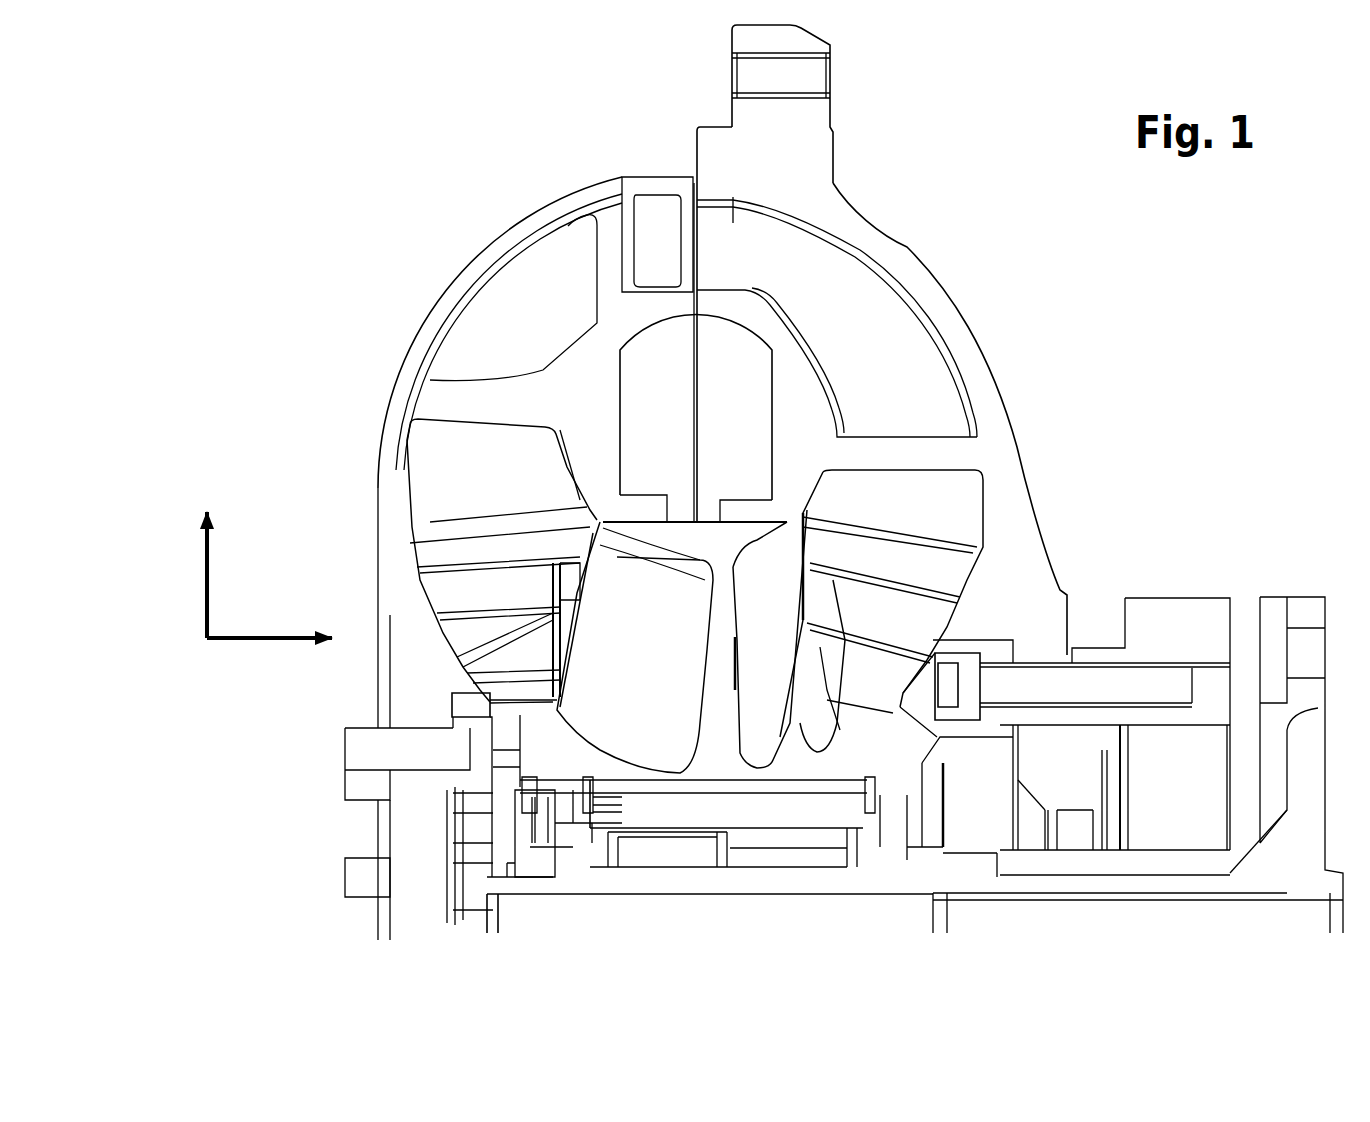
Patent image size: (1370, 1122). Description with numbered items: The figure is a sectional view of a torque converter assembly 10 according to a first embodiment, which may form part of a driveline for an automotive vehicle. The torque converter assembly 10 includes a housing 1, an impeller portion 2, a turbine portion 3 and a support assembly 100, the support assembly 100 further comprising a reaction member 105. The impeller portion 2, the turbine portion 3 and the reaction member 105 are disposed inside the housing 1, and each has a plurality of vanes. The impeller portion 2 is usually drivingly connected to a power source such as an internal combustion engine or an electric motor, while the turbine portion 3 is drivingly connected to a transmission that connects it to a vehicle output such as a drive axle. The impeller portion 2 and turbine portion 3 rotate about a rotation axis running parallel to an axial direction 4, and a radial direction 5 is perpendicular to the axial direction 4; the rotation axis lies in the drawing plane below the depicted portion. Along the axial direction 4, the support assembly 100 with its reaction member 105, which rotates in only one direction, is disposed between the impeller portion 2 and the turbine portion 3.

The housing 1 is at (513, 226).
The impeller portion 2 is at (935, 492).
The turbine portion 3 is at (490, 480).
The axial direction 4 is at (316, 645).
The radial direction 5 is at (203, 545).
The torque converter assembly 10 is at (1131, 403).
The support assembly 100 is at (540, 655).
The reaction member 105 is at (775, 620).